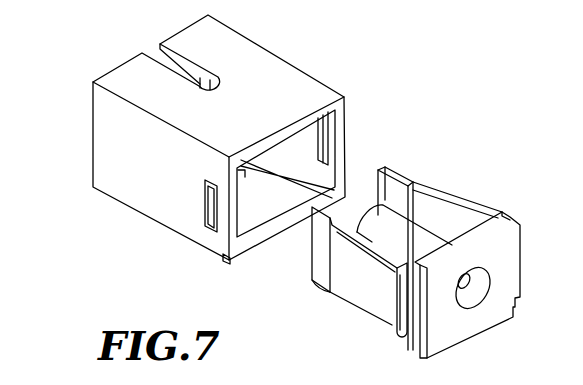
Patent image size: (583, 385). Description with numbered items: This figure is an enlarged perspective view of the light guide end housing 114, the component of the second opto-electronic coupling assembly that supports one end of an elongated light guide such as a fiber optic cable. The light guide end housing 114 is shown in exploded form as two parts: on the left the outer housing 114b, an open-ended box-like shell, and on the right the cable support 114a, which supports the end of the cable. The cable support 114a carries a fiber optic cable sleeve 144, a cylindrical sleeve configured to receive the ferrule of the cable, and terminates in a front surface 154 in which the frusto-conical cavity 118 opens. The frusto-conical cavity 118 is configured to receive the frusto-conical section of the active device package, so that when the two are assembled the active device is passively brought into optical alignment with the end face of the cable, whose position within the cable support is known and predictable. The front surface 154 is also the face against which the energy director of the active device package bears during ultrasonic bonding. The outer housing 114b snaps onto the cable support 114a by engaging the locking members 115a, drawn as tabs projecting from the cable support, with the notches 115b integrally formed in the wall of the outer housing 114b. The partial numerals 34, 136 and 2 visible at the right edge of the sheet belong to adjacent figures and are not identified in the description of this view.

The light guide end housing 114 is at (350, 80).
The cable support 114a is at (482, 213).
The outer housing 114b is at (113, 198).
The locking members 115a is at (390, 322).
The notches 115b is at (208, 232).
The fiber optic cable sleeve 144 is at (365, 210).
The front surface 154 is at (520, 253).
The frusto-conical cavity 118 is at (472, 297).
The partial numeral 34 is at (569, 19).
The partial numeral 136 is at (562, 114).
The partial numeral 2 is at (575, 274).